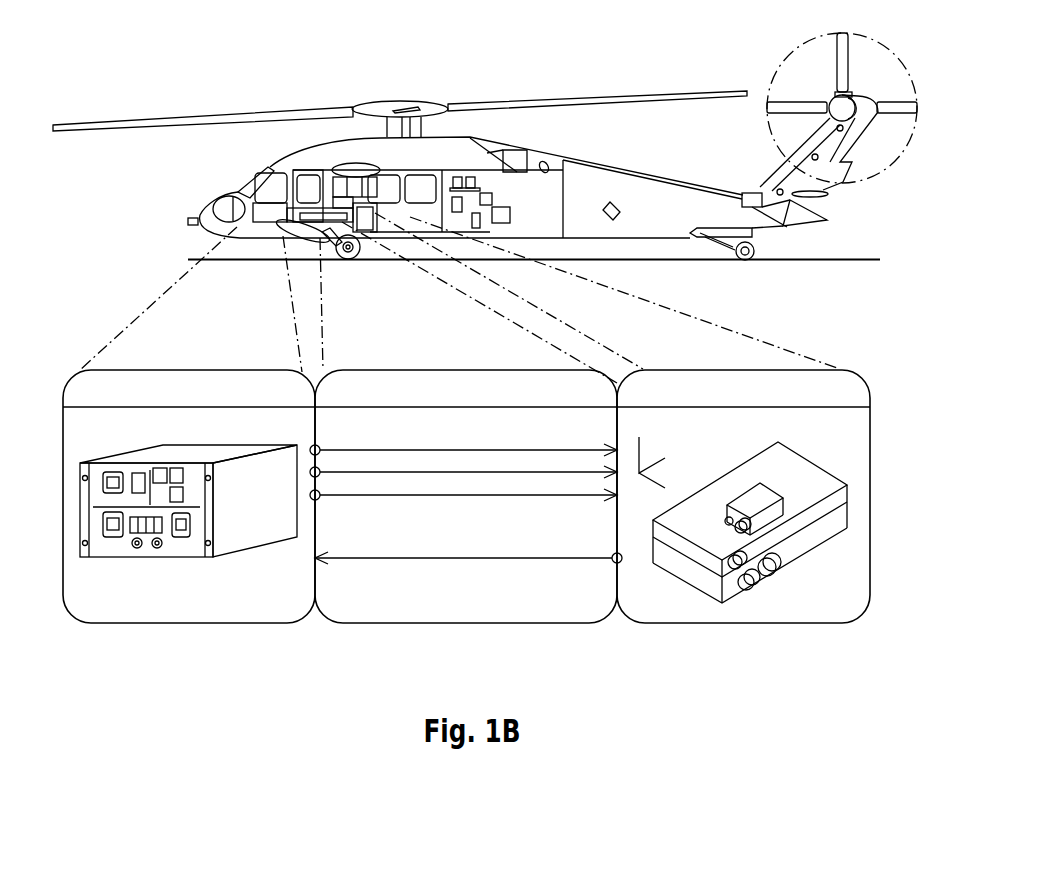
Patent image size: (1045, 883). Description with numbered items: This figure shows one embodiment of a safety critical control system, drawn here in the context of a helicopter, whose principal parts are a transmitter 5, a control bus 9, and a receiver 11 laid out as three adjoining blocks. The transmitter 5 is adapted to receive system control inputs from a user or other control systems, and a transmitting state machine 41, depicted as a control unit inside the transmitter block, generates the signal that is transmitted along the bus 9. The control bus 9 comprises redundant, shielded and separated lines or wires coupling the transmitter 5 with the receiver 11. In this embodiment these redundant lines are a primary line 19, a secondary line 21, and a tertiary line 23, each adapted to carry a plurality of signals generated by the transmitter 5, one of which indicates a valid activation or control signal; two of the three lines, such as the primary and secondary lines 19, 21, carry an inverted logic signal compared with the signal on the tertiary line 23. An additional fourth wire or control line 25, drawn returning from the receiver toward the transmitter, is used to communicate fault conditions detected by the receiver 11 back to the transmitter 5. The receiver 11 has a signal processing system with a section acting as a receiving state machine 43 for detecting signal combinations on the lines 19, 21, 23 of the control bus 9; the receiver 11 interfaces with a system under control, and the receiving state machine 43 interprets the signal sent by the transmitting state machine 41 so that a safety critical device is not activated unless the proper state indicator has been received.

The transmitter 5 is at (230, 370).
The control bus 9 is at (397, 370).
The receiver 11 is at (870, 430).
The primary line 19 is at (365, 448).
The secondary line 21 is at (400, 474).
The tertiary line 23 is at (542, 497).
The fourth wire or control line 25 is at (465, 560).
The transmitting state machine 41 is at (157, 558).
The receiving state machine 43 is at (775, 569).